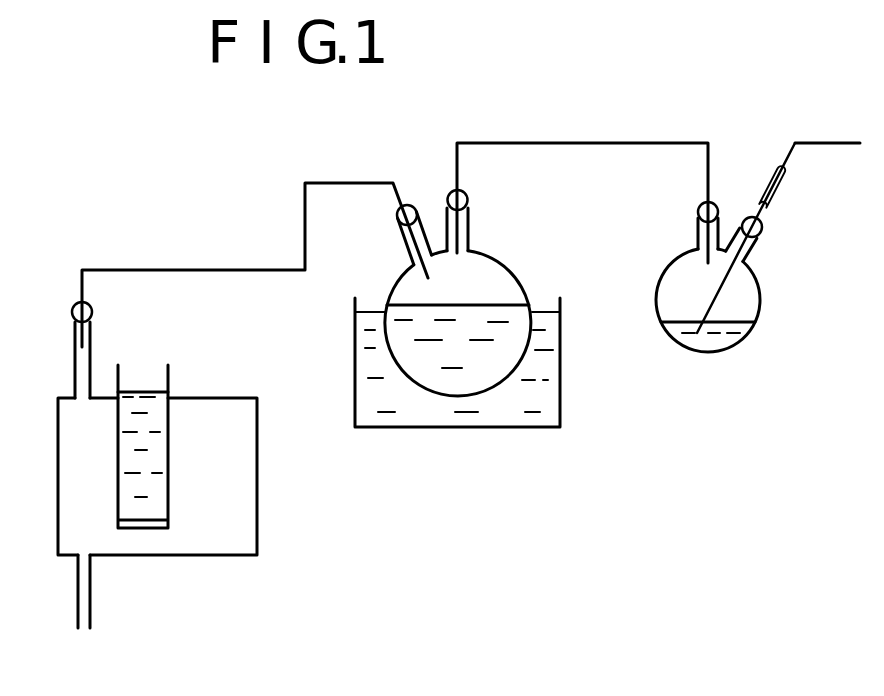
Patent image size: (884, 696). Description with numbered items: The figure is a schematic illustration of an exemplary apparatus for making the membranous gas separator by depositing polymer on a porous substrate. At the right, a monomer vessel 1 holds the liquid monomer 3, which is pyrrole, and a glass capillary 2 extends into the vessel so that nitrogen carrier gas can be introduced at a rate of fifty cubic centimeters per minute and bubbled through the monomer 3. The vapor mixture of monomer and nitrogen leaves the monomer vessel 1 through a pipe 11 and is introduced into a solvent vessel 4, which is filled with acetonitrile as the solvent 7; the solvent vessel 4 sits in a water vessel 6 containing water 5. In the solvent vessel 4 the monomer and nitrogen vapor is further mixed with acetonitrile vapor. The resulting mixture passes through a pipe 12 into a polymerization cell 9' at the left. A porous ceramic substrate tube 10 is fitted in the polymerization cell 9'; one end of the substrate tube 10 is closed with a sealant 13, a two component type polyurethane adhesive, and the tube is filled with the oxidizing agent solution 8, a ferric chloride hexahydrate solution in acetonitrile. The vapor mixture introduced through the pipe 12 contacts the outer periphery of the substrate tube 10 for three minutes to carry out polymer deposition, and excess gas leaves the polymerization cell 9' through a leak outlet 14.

The monomer vessel 1 is at (760, 292).
The glass capillary 2 is at (777, 190).
The monomer 3 is at (722, 340).
The solvent vessel 4 is at (517, 277).
The water 5 is at (515, 403).
The water vessel 6 is at (560, 368).
The solvent 7 is at (452, 382).
The oxidizing agent solution 8 is at (143, 388).
The polymerization cell 9' is at (197, 428).
The substrate tube 10 is at (168, 490).
The pipe 11 is at (585, 145).
The pipe 12 is at (213, 270).
The sealant 13 is at (143, 522).
The leak outlet 14 is at (84, 630).